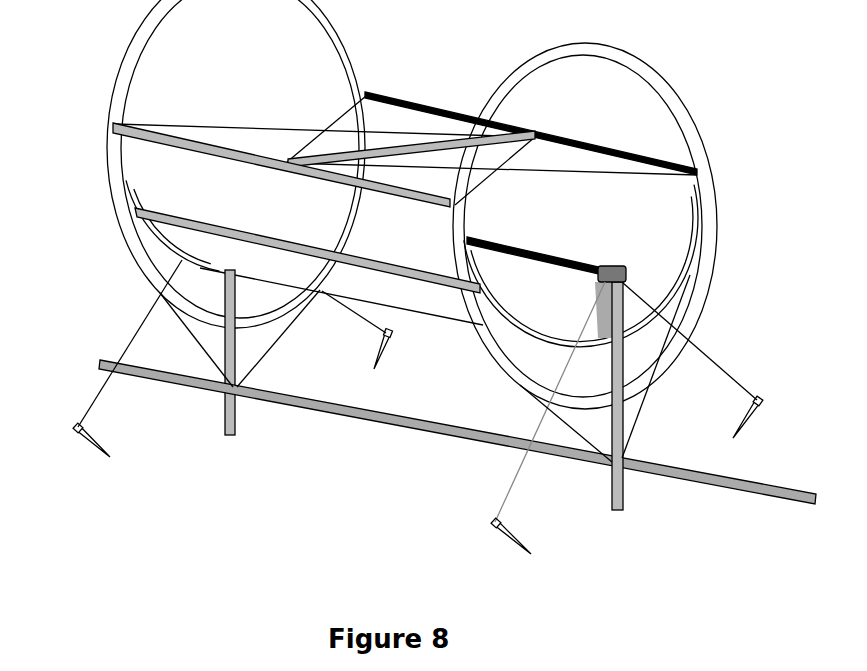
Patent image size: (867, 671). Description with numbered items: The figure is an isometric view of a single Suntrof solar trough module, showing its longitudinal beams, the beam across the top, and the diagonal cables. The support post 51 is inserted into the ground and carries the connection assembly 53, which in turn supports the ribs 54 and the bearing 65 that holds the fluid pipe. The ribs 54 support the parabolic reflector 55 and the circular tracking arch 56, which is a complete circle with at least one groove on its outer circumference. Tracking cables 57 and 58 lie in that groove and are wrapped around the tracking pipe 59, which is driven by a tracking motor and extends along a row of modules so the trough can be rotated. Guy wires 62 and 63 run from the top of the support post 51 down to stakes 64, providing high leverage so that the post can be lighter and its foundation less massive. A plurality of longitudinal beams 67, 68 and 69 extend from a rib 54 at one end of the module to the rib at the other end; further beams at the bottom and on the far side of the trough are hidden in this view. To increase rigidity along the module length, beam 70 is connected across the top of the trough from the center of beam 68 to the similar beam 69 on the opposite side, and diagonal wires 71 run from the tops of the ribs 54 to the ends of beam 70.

The support post 51 is at (610, 387).
The connection assembly 53 is at (597, 298).
The ribs 54 is at (150, 243).
The parabolic reflector 55 is at (617, 240).
The circular tracking arch 56 is at (657, 73).
The tracking cable 57 is at (563, 427).
The tracking cable 58 is at (653, 410).
The tracking pipe 59 is at (713, 477).
The guy wire 62 is at (148, 312).
The guy wire 63 is at (710, 350).
The stakes 64 is at (75, 427).
The bearing 65 is at (613, 265).
The longitudinal beam 67 is at (223, 226).
The longitudinal beam 68 is at (392, 195).
The longitudinal beam 69 is at (413, 100).
The beam 70 is at (498, 137).
The diagonal wires 71 is at (345, 112).